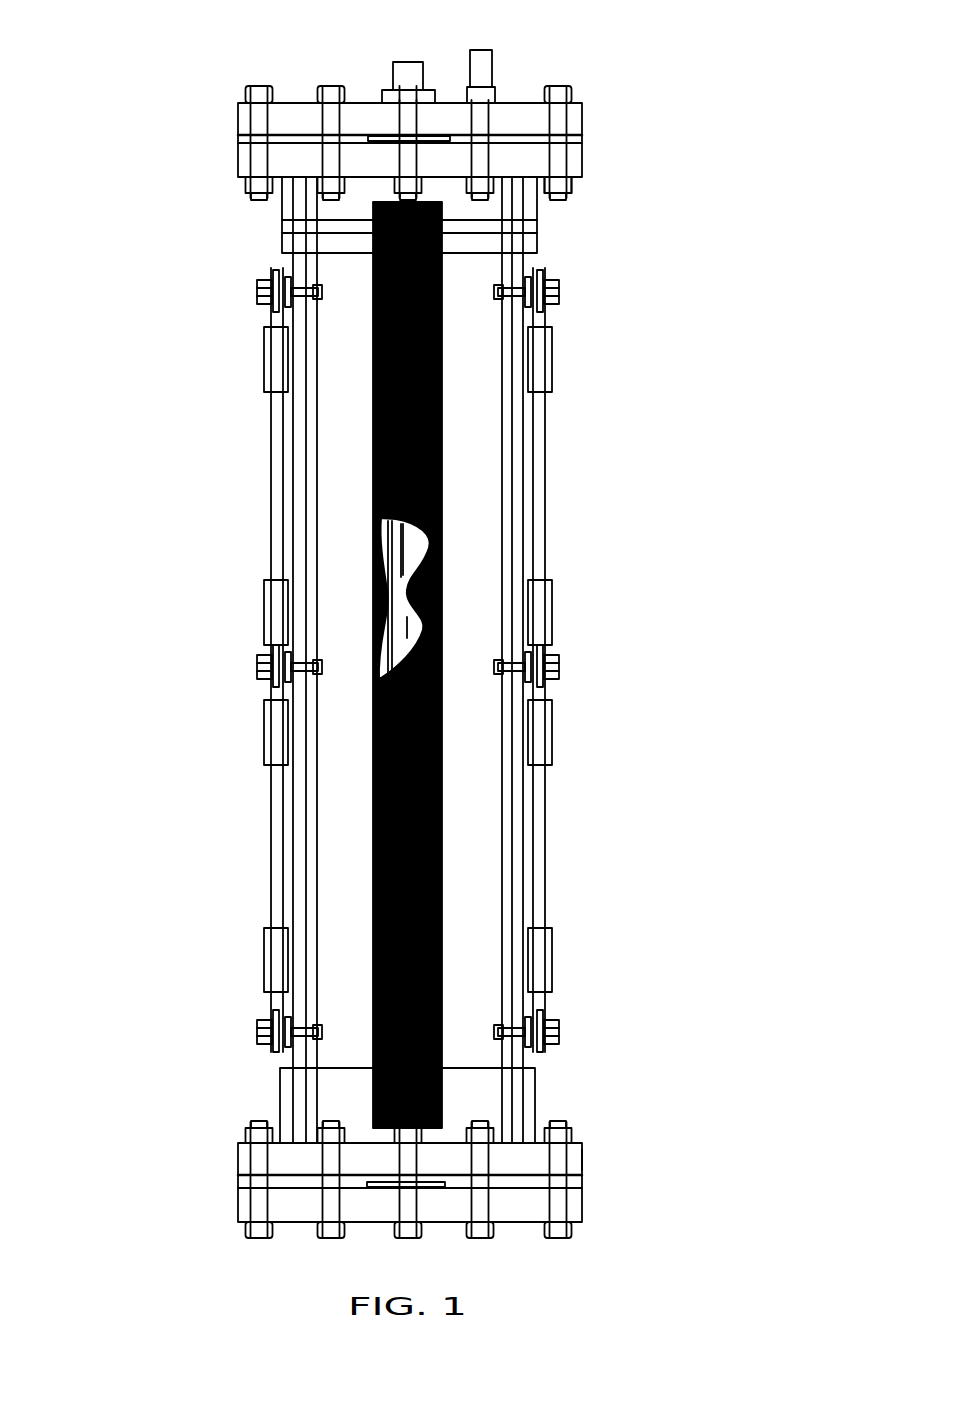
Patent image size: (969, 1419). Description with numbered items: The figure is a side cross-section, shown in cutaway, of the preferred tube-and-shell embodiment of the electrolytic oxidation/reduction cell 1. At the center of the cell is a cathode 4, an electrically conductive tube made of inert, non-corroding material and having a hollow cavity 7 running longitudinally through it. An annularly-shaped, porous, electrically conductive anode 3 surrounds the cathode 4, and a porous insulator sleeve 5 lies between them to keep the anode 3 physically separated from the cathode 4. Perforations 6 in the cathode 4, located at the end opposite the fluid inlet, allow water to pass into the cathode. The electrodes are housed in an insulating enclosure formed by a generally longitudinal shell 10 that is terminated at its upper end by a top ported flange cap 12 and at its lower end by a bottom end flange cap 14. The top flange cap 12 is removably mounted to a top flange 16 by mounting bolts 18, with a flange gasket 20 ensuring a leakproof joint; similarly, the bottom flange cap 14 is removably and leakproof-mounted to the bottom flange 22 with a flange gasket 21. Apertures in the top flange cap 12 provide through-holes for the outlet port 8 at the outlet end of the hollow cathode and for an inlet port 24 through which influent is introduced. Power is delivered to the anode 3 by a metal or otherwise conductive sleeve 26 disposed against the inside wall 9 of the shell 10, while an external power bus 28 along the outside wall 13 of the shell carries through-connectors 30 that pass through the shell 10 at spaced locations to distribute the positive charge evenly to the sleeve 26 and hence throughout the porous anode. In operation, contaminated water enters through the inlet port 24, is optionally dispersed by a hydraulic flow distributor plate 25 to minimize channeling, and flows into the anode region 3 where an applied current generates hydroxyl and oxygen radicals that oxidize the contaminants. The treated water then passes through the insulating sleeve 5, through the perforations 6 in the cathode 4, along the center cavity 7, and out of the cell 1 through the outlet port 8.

The electrolytic cell 1 is at (98, 110).
The anode 3 is at (408, 665).
The cathode 4 is at (414, 778).
The porous insulator sleeve 5 is at (438, 977).
The perforations 6 is at (372, 912).
The hollow cavity 7 is at (405, 598).
The outlet port 8 is at (405, 68).
The inside wall 9 is at (508, 369).
The shell 10 is at (238, 660).
The top ported flange cap 12 is at (393, 140).
The outside wall 13 is at (299, 322).
The bottom end flange cap 14 is at (466, 1148).
The top flange 16 is at (581, 182).
The mounting bolts 18 is at (572, 86).
The flange gasket 20 is at (238, 141).
The flange gasket 21 is at (583, 1185).
The bottom flange 22 is at (583, 1158).
The inlet port 24 is at (485, 67).
The hydraulic flow distributor plate 25 is at (352, 224).
The conductive sleeve 26 is at (319, 792).
The external power bus 28 is at (543, 492).
The through-connectors 30 is at (258, 290).